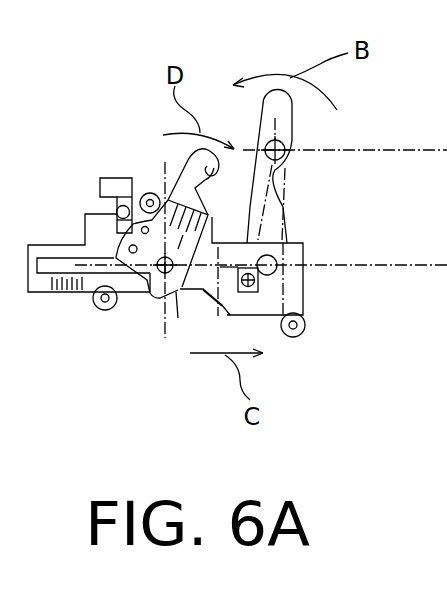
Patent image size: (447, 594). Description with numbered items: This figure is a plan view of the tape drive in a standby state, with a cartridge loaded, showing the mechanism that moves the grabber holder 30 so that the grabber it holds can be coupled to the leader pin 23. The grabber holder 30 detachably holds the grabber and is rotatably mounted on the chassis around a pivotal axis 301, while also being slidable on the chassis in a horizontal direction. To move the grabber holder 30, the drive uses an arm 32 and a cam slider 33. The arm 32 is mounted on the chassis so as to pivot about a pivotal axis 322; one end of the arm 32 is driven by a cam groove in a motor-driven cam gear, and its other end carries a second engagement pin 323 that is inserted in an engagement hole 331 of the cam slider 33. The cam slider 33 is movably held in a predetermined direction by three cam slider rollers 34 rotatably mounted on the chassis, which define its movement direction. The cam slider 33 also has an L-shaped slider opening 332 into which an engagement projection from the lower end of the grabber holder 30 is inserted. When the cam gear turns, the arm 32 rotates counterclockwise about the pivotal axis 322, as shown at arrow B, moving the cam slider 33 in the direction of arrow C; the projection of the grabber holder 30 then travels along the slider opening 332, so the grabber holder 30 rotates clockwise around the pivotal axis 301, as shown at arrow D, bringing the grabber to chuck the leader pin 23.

The leader pin 23 is at (270, 275).
The grabber holder 30 is at (157, 297).
The pivotal axis 301 is at (178, 318).
The arm 32 is at (278, 207).
The pivotal axis 322 is at (285, 138).
The second engagement pin 323 is at (240, 292).
The cam slider 33 is at (53, 295).
The engagement hole 331 is at (222, 305).
The slider opening 332 is at (55, 263).
The cam slider rollers 34 is at (150, 193).